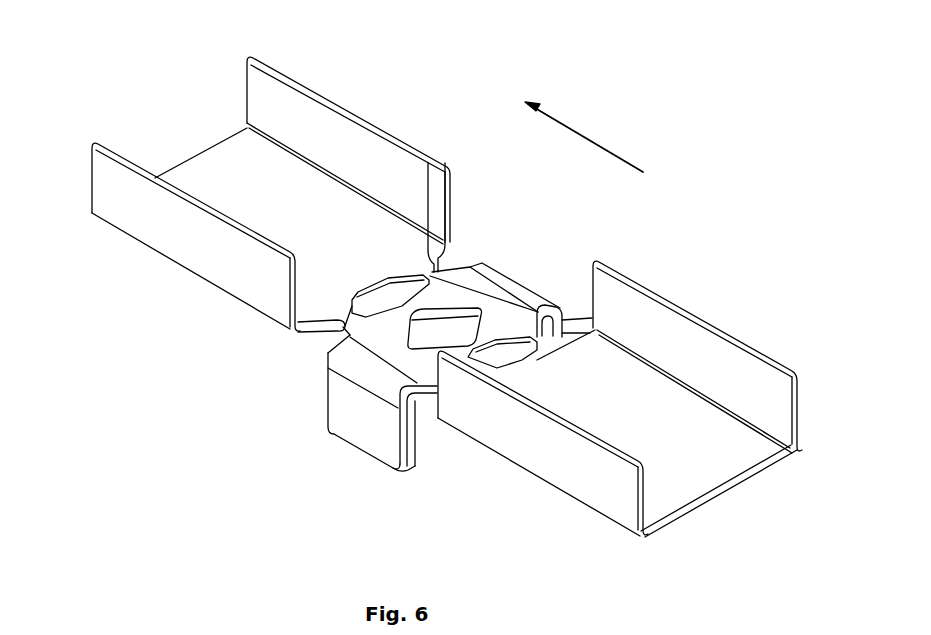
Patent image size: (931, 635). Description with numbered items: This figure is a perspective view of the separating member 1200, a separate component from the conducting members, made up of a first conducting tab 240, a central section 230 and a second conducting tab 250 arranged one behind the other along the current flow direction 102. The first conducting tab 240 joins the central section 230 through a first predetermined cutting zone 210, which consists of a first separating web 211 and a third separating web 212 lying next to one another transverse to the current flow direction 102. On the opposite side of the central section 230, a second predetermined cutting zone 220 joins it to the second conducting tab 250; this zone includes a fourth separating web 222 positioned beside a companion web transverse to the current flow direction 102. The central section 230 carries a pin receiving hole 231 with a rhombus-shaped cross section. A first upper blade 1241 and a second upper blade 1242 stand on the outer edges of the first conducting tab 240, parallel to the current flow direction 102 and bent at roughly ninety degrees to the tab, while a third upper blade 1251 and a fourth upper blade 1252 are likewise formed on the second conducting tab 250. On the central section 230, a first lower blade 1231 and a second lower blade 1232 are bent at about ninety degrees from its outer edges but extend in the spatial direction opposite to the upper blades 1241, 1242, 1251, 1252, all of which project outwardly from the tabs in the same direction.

The separating member 1200 is at (128, 53).
The current flow direction 102 is at (582, 133).
The first conducting tab 240 is at (208, 160).
The first upper blade 1241 is at (165, 248).
The second upper blade 1242 is at (363, 138).
The first predetermined cutting zone 210 is at (332, 330).
The first separating web 211 is at (340, 333).
The third separating web 212 is at (428, 213).
The second predetermined cutting zone 220 is at (426, 420).
The fourth separating web 222 is at (540, 312).
The central section 230 is at (508, 290).
The pin receiving hole 231 is at (410, 336).
The first lower blade 1231 is at (363, 433).
The second lower blade 1232 is at (592, 320).
The second conducting tab 250 is at (694, 489).
The third upper blade 1251 is at (594, 493).
The fourth upper blade 1252 is at (749, 365).